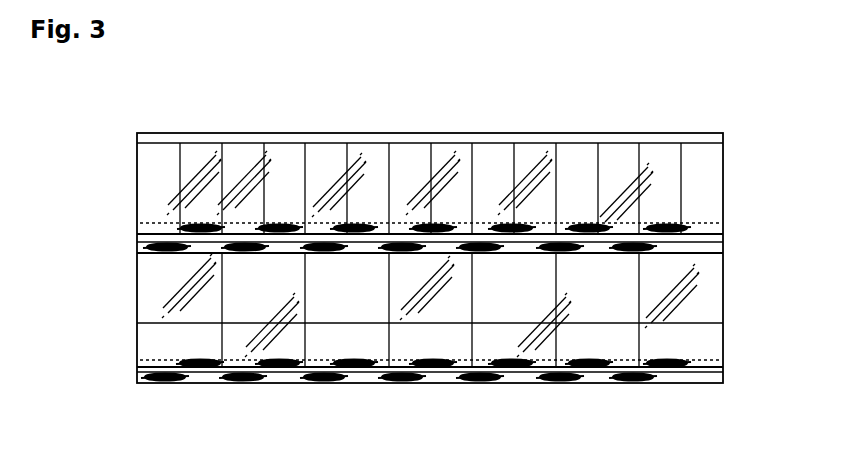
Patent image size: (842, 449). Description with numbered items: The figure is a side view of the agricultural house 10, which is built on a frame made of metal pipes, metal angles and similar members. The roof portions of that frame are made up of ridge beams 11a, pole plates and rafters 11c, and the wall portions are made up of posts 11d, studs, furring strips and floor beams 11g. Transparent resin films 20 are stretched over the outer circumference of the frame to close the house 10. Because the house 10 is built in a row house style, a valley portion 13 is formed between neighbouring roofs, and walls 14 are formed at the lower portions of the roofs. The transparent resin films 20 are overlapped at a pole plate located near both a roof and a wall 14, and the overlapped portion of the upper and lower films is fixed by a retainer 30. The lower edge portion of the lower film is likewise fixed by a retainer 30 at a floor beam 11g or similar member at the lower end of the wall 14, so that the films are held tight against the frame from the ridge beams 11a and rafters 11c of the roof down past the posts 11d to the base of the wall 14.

The house 10 is at (585, 118).
The ridge beams 11a is at (405, 140).
The rafters 11c is at (305, 175).
The posts 11d is at (137, 237).
The floor beams 11g is at (137, 371).
The valley portion 13 is at (705, 163).
The walls 14 is at (523, 295).
The transparent resin films 20 is at (193, 153).
The retainer 30 is at (482, 238).